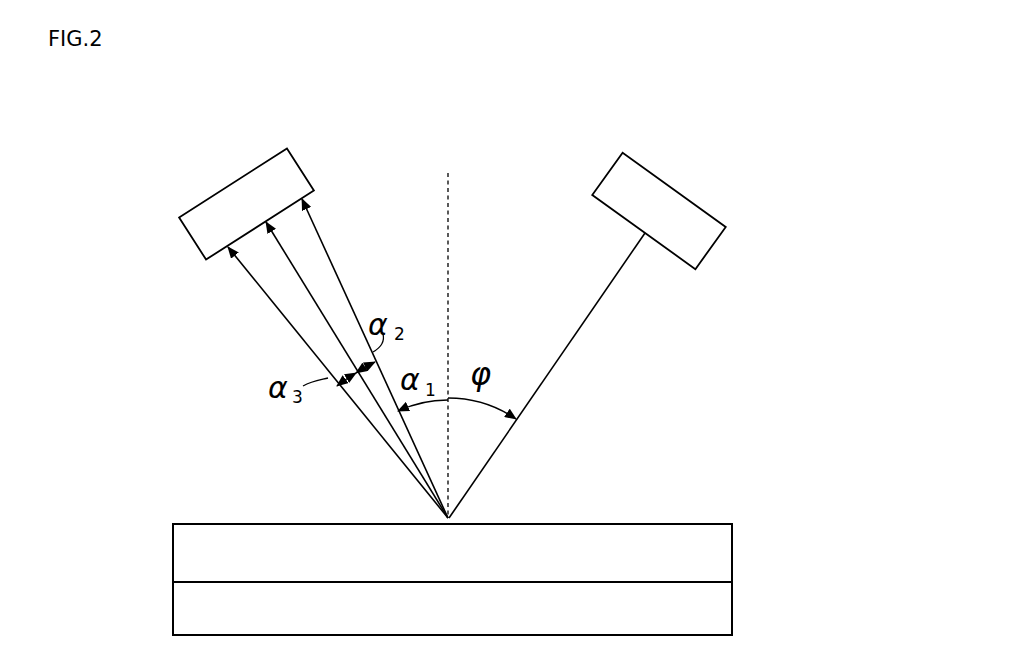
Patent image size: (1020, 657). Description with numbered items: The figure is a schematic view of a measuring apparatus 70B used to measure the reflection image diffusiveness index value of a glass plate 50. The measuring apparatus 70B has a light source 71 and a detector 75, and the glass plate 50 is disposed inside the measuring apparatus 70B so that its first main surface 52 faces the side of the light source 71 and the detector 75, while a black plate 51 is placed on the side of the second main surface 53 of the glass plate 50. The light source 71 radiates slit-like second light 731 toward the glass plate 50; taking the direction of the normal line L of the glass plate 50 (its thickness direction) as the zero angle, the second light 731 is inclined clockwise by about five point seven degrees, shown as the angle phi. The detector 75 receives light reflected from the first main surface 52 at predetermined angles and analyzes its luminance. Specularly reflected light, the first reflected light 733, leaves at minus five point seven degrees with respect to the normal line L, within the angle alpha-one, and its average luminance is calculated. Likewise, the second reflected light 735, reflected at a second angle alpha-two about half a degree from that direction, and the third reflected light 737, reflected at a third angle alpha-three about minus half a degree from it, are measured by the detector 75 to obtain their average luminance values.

The measuring apparatus 70B is at (736, 92).
The light source 71 is at (693, 202).
The second light 731 is at (583, 327).
The detector (analyzer) 75 is at (228, 185).
The first reflected light 733 is at (296, 278).
The second reflected light 735 is at (322, 246).
The third reflected light 737 is at (288, 333).
The glass plate 50 is at (717, 547).
The black plate 51 is at (707, 613).
The first main surface 52 is at (683, 523).
The second main surface 53 is at (705, 578).
The normal line L is at (452, 186).